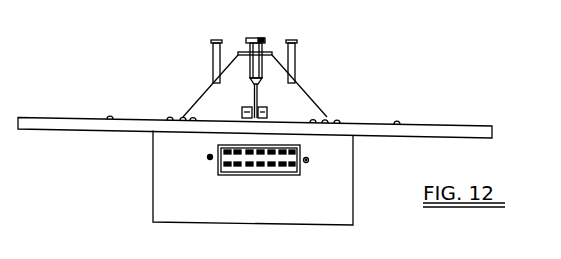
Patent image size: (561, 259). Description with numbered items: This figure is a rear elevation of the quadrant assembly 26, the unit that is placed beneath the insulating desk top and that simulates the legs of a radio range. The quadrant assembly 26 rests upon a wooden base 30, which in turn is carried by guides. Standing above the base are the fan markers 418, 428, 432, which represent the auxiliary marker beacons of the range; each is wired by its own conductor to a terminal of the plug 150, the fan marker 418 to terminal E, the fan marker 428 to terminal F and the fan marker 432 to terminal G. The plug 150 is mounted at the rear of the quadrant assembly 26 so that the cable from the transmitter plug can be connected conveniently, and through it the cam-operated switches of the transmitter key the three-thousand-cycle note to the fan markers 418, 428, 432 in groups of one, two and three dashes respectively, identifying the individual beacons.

The quadrant assembly 26 is at (315, 81).
The wooden base 30 is at (437, 128).
The plug 150 is at (226, 162).
The fan marker 418 is at (205, 37).
The fan marker 428 is at (272, 29).
The fan marker 432 is at (303, 39).